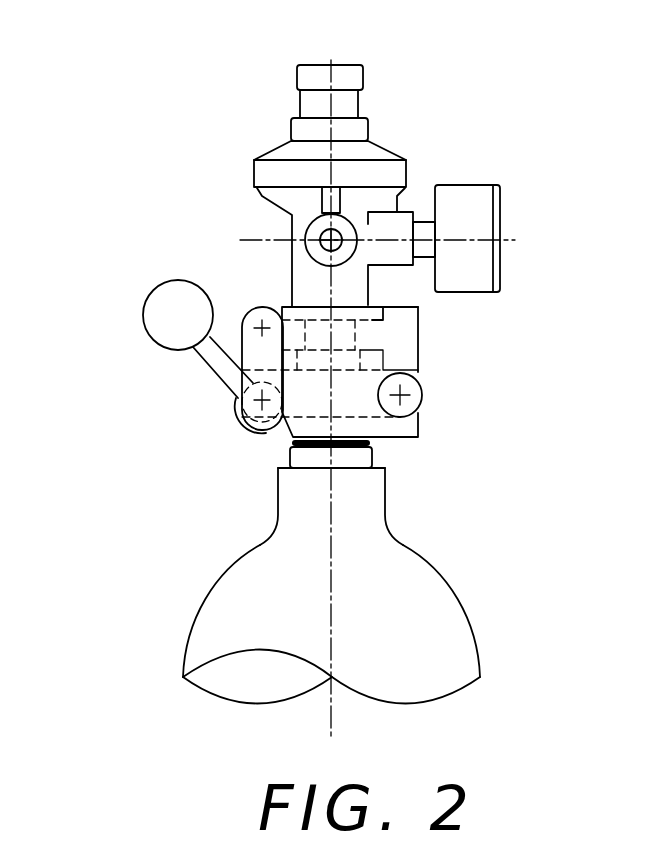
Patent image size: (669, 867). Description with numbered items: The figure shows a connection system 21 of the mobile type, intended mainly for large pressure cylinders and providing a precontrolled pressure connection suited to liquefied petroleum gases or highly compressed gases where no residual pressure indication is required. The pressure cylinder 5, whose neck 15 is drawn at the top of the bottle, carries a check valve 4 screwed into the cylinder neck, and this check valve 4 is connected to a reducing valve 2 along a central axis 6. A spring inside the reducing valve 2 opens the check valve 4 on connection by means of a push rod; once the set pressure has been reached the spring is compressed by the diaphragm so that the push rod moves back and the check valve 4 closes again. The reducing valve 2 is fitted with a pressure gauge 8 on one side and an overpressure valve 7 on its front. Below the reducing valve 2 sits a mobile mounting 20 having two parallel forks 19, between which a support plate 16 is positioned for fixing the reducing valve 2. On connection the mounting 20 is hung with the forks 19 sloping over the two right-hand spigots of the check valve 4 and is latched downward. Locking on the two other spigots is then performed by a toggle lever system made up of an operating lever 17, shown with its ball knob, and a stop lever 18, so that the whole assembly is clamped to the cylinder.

The reducing valve 2 is at (440, 113).
The check valve 4 is at (353, 455).
The pressure cylinder 5 is at (212, 640).
The central axis 6 is at (333, 648).
The overpressure valve 7 is at (318, 224).
The pressure gauge 8 is at (477, 200).
The bottle neck 15 is at (300, 507).
The support plate 16 is at (310, 313).
The operating lever 17 is at (157, 313).
The stop lever 18 is at (253, 363).
The forks 19 is at (412, 427).
The mobile mounting 20 is at (192, 417).
The connection system 21 is at (475, 333).